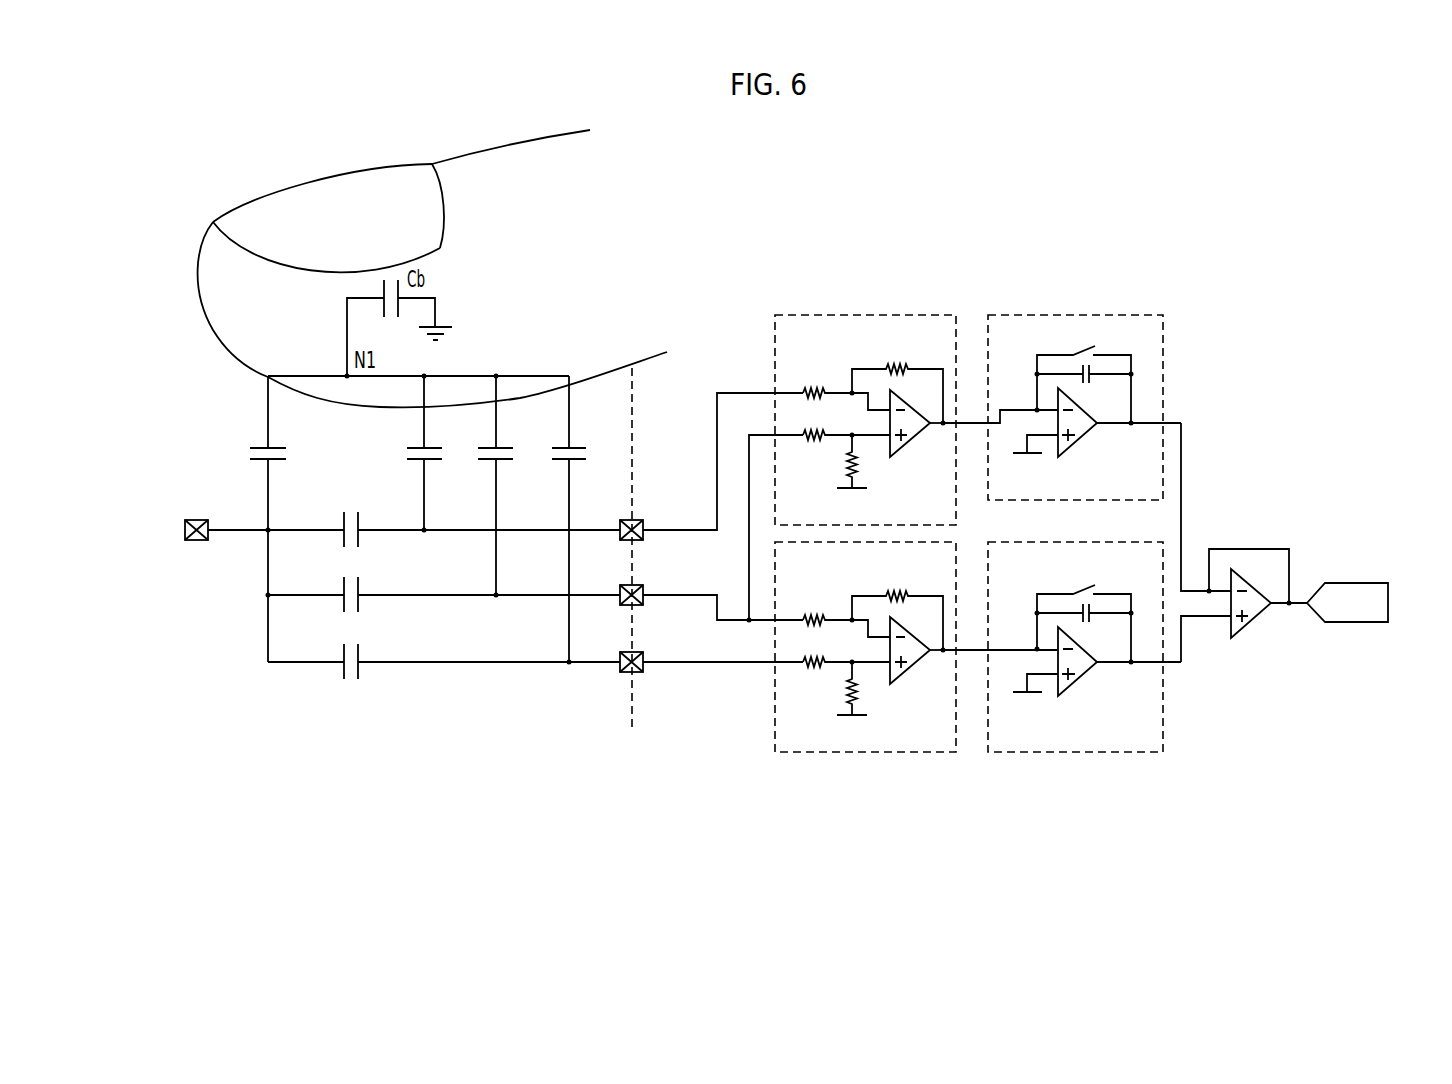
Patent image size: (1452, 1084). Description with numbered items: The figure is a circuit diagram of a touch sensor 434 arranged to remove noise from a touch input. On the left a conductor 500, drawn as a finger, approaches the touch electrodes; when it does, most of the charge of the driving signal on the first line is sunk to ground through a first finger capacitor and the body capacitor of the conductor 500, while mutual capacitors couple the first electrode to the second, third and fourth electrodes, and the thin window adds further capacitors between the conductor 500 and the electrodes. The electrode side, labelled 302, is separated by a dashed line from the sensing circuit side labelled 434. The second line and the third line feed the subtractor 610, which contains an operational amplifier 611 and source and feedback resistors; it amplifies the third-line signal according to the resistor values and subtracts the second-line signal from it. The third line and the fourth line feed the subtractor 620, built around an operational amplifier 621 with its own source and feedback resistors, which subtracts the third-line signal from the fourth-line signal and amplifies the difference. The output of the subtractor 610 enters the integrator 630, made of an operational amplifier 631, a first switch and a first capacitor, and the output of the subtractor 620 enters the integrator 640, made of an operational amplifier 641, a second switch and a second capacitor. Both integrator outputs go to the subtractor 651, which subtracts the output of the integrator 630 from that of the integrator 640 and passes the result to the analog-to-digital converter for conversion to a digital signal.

The conductor 500 is at (255, 192).
The touch sensor / touch panel 302 is at (632, 709).
The touch sensor 434 is at (1010, 538).
The subtractor 610 is at (865, 399).
The operational amplifier 611 is at (913, 440).
The subtractor 620 is at (865, 672).
The operational amplifier 621 is at (913, 665).
The integrator 630 is at (1062, 386).
The operational amplifier 631 is at (1080, 440).
The integrator 640 is at (1062, 672).
The operational amplifier 641 is at (1081, 676).
The subtractor 651 is at (1252, 622).